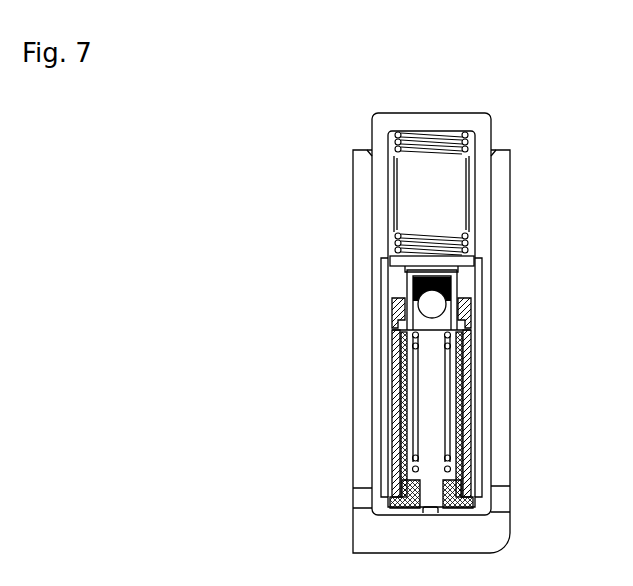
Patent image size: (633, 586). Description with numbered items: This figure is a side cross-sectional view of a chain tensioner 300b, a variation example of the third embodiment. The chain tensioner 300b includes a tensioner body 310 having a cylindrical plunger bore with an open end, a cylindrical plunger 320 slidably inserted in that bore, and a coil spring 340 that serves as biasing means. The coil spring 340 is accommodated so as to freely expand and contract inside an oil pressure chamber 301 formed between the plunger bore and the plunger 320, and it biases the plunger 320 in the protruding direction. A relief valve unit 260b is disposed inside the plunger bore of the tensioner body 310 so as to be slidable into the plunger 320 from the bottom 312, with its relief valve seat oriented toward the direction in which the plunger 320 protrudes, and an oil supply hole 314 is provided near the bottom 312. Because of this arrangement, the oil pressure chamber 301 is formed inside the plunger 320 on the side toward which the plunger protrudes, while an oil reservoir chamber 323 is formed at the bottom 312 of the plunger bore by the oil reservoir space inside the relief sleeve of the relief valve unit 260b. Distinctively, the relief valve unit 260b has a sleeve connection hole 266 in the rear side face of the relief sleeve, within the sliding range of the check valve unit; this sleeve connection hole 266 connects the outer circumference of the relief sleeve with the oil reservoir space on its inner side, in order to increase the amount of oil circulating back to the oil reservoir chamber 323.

The chain tensioner 300b is at (266, 124).
The tensioner body 310 is at (364, 214).
The plunger 320 is at (405, 122).
The coil spring 340 is at (468, 152).
The oil pressure chamber 301 is at (434, 199).
The sleeve connection hole 266 is at (391, 337).
The relief valve unit 260b is at (390, 388).
The oil reservoir chamber 323 is at (432, 410).
The bottom 312 is at (434, 506).
The oil supply hole 314 is at (365, 498).